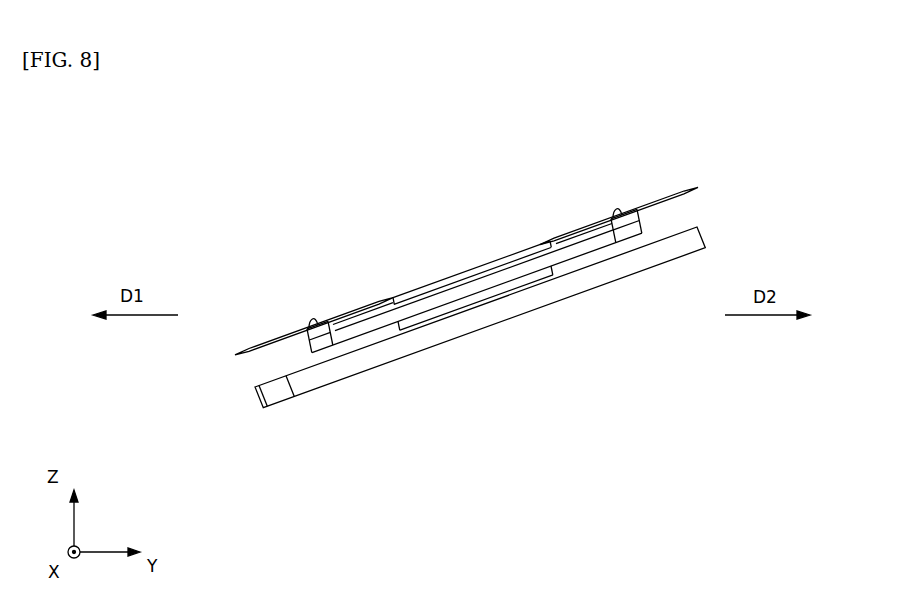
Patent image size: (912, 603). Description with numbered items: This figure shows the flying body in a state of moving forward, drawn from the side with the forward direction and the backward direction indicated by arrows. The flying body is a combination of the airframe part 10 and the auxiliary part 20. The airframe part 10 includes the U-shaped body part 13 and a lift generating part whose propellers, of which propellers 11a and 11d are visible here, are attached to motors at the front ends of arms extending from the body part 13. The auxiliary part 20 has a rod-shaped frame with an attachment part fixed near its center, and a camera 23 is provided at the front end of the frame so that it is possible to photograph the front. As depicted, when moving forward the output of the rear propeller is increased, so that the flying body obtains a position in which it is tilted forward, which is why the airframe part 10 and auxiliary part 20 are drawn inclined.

The airframe part 10 is at (443, 287).
The propeller 11a is at (613, 205).
The propeller 11d is at (311, 325).
The body part 13 is at (495, 277).
The auxiliary part 20 is at (702, 232).
The camera 23 is at (255, 398).